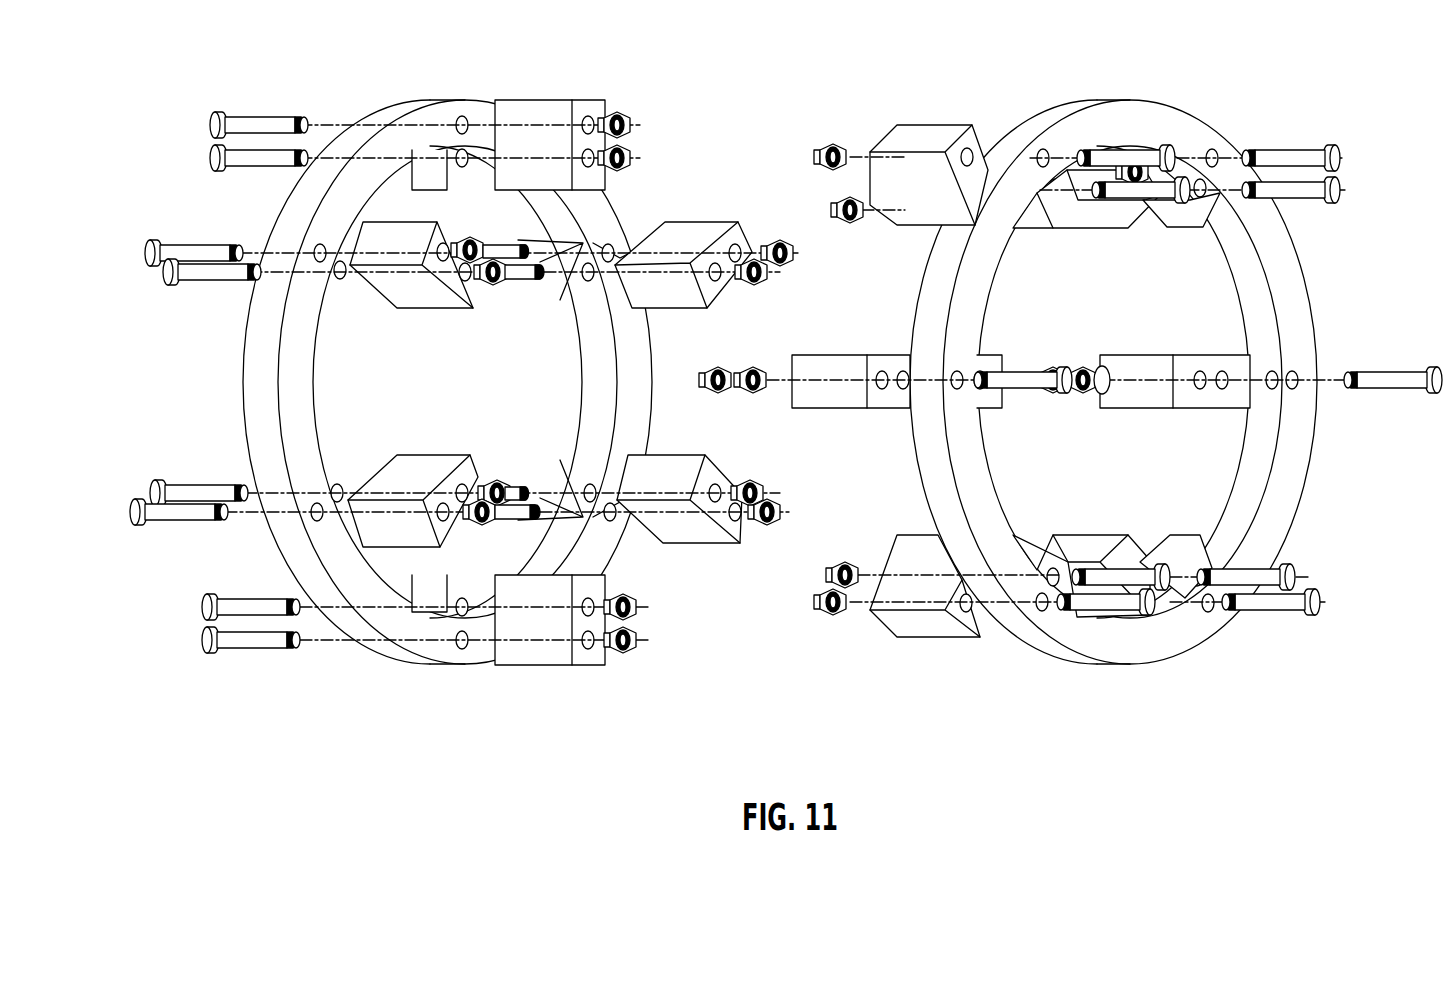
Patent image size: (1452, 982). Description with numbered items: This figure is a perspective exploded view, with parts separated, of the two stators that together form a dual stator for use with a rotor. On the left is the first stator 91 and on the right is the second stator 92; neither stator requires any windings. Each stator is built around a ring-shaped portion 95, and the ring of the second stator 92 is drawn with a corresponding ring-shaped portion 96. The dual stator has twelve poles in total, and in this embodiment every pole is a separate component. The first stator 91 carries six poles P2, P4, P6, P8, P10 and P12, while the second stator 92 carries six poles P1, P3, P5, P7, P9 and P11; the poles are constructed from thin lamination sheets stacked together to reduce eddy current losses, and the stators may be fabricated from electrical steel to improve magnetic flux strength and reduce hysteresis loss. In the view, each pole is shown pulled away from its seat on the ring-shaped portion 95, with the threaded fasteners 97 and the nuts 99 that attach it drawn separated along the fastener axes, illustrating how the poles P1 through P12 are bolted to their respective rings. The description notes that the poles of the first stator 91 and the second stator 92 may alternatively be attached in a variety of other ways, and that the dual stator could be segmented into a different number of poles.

The first stator 91 is at (740, 692).
The second stator 92 is at (1412, 692).
The ring-shaped portion 95 is at (405, 106).
The second ring 96 is at (1070, 108).
The threaded fasteners 97 is at (197, 486).
The nuts 99 is at (838, 146).
The pole P1 is at (542, 100).
The pole P2 is at (1092, 228).
The pole P3 is at (702, 220).
The pole P4 is at (1145, 412).
The pole P5 is at (706, 548).
The pole P6 is at (1082, 534).
The pole P7 is at (536, 665).
The pole P8 is at (924, 640).
The pole P9 is at (438, 454).
The pole P10 is at (818, 410).
The pole P11 is at (432, 312).
The pole P12 is at (934, 124).